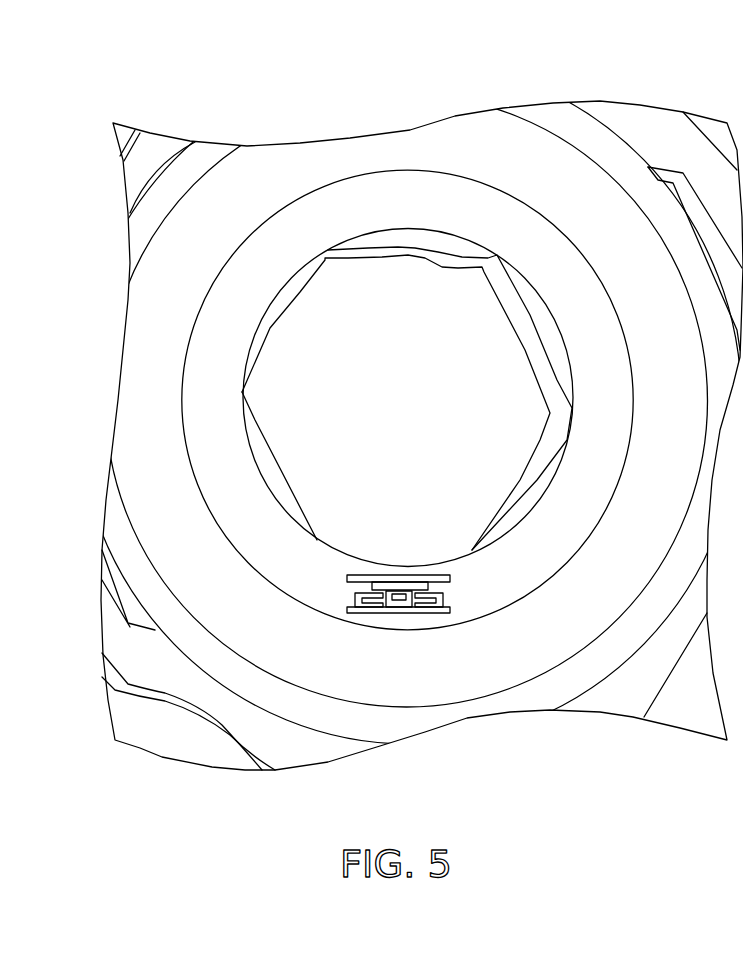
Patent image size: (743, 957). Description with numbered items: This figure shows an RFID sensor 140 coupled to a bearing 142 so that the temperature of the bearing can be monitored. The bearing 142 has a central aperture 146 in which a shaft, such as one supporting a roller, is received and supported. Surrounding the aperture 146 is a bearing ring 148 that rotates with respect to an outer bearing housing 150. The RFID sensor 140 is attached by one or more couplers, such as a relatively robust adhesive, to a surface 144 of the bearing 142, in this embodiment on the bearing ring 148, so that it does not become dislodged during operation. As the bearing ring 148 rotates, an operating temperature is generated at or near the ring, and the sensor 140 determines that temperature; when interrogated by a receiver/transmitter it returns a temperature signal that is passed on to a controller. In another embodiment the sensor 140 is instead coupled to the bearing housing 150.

The RFID sensor 140 is at (380, 607).
The bearing 142 is at (488, 202).
The surface 144 is at (528, 572).
The aperture 146 is at (423, 313).
The bearing ring 148 is at (256, 503).
The bearing housing 150 is at (302, 163).